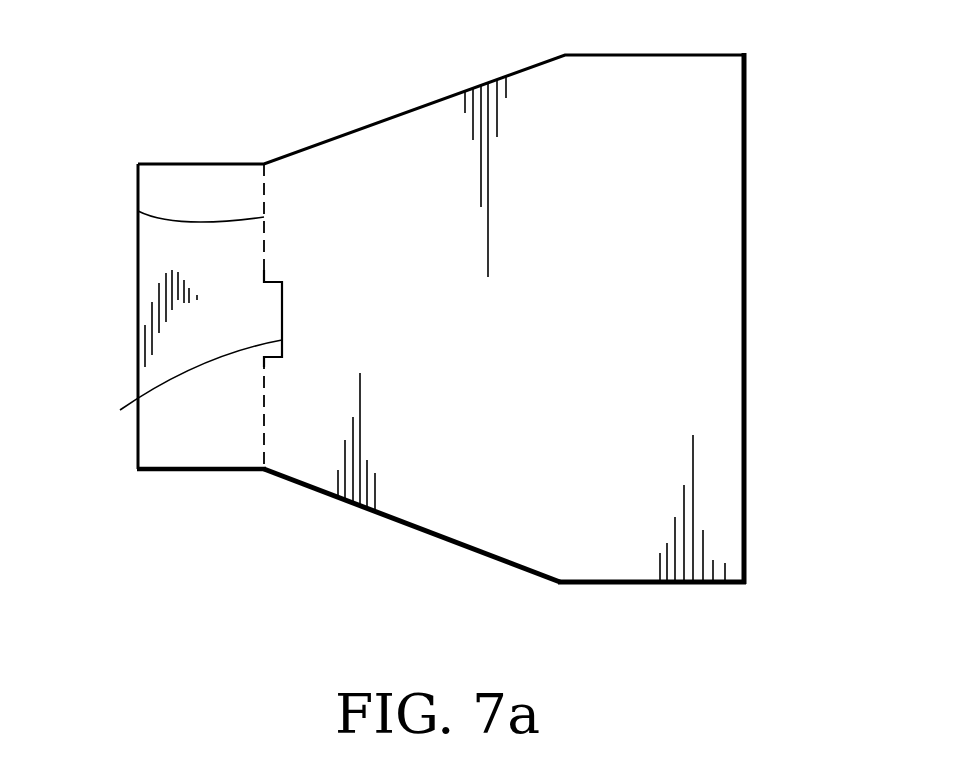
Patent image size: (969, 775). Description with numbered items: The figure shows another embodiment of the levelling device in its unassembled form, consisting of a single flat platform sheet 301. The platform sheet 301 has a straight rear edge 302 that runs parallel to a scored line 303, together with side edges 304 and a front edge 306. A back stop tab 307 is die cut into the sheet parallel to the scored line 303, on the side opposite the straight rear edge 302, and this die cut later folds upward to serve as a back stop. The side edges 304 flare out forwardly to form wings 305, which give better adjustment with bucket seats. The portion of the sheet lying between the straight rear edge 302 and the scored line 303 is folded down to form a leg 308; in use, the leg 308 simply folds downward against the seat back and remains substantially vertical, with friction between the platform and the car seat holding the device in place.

The platform sheet 301 is at (712, 200).
The straight rear edge 302 is at (135, 352).
The scored line 303 is at (138, 211).
The side edges 304 is at (363, 510).
The wings 305 is at (635, 585).
The front edge 306 is at (743, 412).
The back stop tab 307 is at (120, 410).
The leg 308 is at (202, 453).